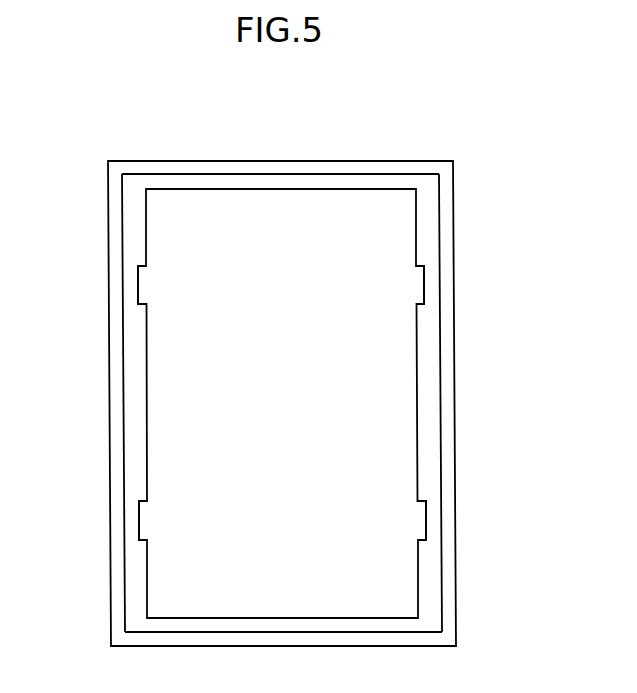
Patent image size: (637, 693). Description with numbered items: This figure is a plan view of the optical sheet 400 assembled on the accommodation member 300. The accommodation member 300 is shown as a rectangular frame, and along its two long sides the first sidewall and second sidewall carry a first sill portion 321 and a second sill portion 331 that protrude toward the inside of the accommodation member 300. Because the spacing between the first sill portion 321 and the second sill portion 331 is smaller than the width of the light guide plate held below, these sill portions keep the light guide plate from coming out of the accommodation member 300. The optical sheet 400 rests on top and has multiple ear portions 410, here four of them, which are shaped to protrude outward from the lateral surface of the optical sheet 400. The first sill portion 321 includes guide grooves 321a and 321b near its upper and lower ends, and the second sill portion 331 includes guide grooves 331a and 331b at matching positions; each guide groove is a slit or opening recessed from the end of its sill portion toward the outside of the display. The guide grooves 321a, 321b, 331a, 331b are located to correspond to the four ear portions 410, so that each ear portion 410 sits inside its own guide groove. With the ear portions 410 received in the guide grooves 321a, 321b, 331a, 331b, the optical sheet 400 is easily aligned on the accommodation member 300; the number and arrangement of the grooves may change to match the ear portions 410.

The accommodation member 300 is at (271, 164).
The first sill portion 321 is at (137, 398).
The guide groove 321a is at (138, 285).
The guide groove 321b is at (138, 521).
The second sill portion 331 is at (427, 397).
The guide groove 331a is at (424, 285).
The guide groove 331b is at (426, 521).
The optical sheet 400 is at (343, 198).
The ear portion 410 is at (142, 275).